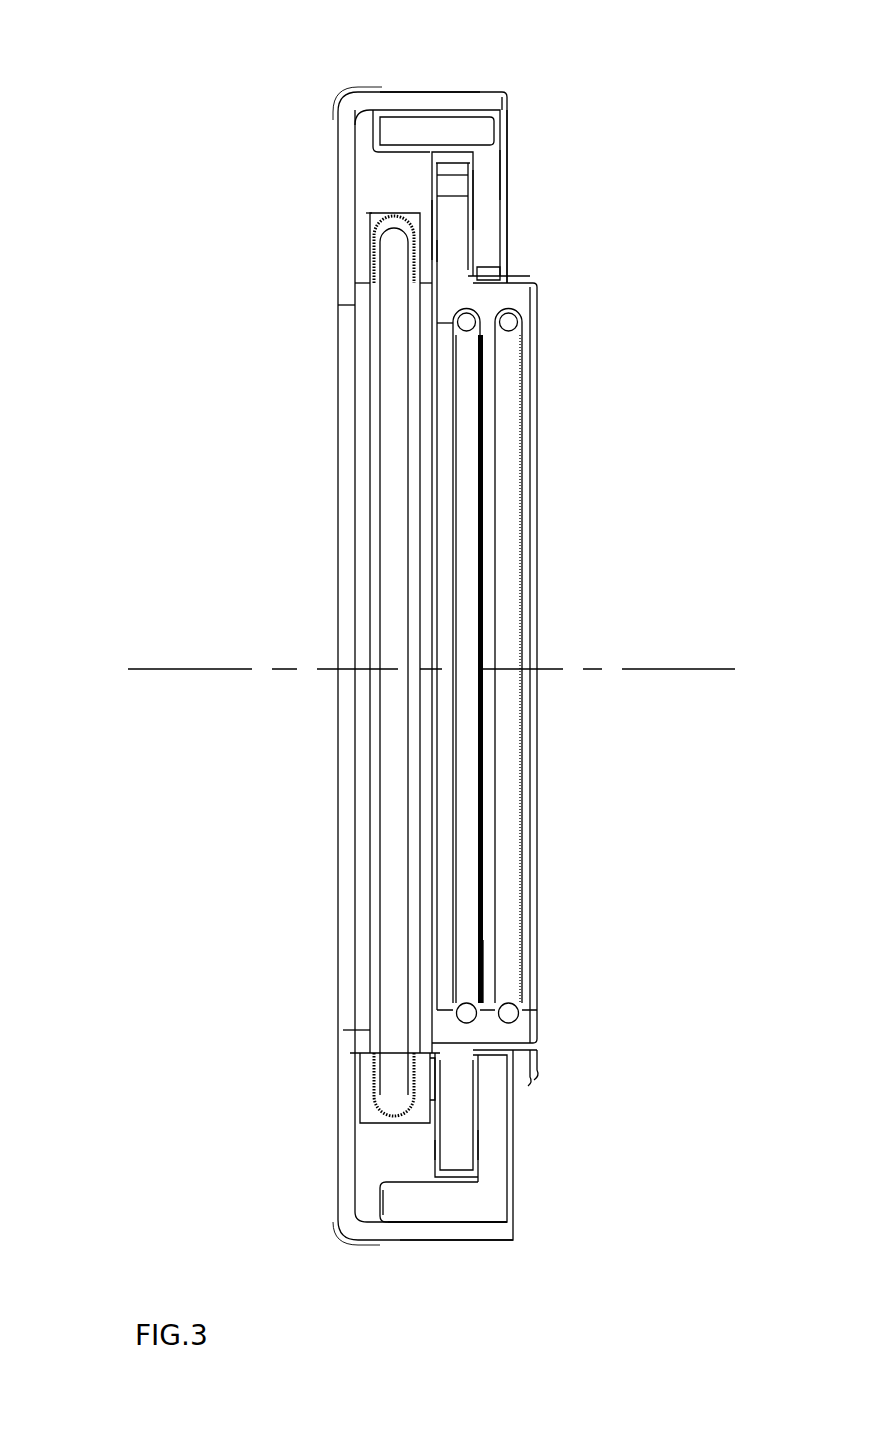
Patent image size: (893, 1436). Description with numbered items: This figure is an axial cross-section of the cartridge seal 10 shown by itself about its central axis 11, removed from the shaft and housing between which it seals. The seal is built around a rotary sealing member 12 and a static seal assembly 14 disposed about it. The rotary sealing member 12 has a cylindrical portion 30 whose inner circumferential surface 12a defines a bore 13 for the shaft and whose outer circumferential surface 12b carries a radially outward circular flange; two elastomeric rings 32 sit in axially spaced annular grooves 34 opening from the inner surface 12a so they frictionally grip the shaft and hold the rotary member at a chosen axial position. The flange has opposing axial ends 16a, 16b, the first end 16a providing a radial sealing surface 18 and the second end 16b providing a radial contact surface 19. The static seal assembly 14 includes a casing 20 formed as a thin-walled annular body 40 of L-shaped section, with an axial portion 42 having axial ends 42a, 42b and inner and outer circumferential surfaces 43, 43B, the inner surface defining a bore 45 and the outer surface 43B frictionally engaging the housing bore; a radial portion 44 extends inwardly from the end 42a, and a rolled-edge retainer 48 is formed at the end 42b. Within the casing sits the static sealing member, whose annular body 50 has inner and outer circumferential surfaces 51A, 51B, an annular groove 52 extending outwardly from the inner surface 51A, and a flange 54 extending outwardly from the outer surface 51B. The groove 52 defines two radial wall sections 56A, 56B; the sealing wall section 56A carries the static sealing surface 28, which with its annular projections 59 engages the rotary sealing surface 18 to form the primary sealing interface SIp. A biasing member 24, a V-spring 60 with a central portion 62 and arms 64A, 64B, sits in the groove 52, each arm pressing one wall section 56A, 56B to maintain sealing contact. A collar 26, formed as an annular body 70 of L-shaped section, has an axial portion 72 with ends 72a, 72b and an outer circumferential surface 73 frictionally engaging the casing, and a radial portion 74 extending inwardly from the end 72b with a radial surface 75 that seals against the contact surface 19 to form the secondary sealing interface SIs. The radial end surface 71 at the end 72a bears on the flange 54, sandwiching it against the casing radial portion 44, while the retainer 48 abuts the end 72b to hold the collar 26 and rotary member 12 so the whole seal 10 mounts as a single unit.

The cartridge seal 10 is at (173, 205).
The central axis 11 is at (692, 668).
The rotary sealing member 12 is at (552, 292).
The inner circumferential surface 12a is at (493, 1000).
The outer circumferential surface 12b is at (518, 1078).
The bore 13 is at (511, 752).
The static seal assembly 14 is at (270, 1163).
The first axial end 16a is at (437, 1148).
The second axial end 16b is at (478, 1142).
The radial sealing surface 18 is at (425, 196).
The radial contact surface 19 is at (509, 157).
The casing 20 is at (328, 125).
The biasing member 24 is at (360, 1090).
The collar 26 is at (520, 1140).
The static sealing surface 28 is at (440, 252).
The cylindrical portion 30 is at (540, 1030).
The elastomeric ring 32 is at (513, 402).
The annular groove 34 is at (510, 320).
The annular body 40 is at (469, 83).
The axial portion 42 is at (421, 92).
The first axial end 42a is at (352, 108).
The second axial end 42b is at (509, 103).
The inner circumferential surface 43 is at (446, 1235).
The outer circumferential surface 43B is at (397, 91).
The radial portion 44 is at (350, 201).
The bore 45 is at (442, 157).
The retainer 48 is at (509, 121).
The annular body 50 is at (348, 1176).
The inner circumferential surface 51A is at (365, 1036).
The outer circumferential surface 51B is at (431, 1216).
The annular groove 52 is at (370, 1113).
The flange 54 is at (368, 1193).
The sealing wall section 56A is at (434, 1092).
The radial wall section 56B is at (366, 1073).
The annular projection 59 is at (440, 1068).
The V-spring 60 is at (366, 265).
The central portion 62 is at (373, 211).
The radial arm 64A is at (479, 270).
The radial arm 64B is at (372, 262).
The annular body 70 is at (512, 1187).
The radial end surface 71 is at (381, 1203).
The axial portion 72 is at (489, 1222).
The first axial end 72a is at (394, 1200).
The second axial end 72b is at (480, 1221).
The outer circumferential surface 73 is at (485, 1241).
The radial portion 74 is at (494, 1163).
The radial surface 75 is at (430, 172).
The secondary sealing interface SIs is at (472, 193).
The primary sealing interface SIp is at (430, 227).